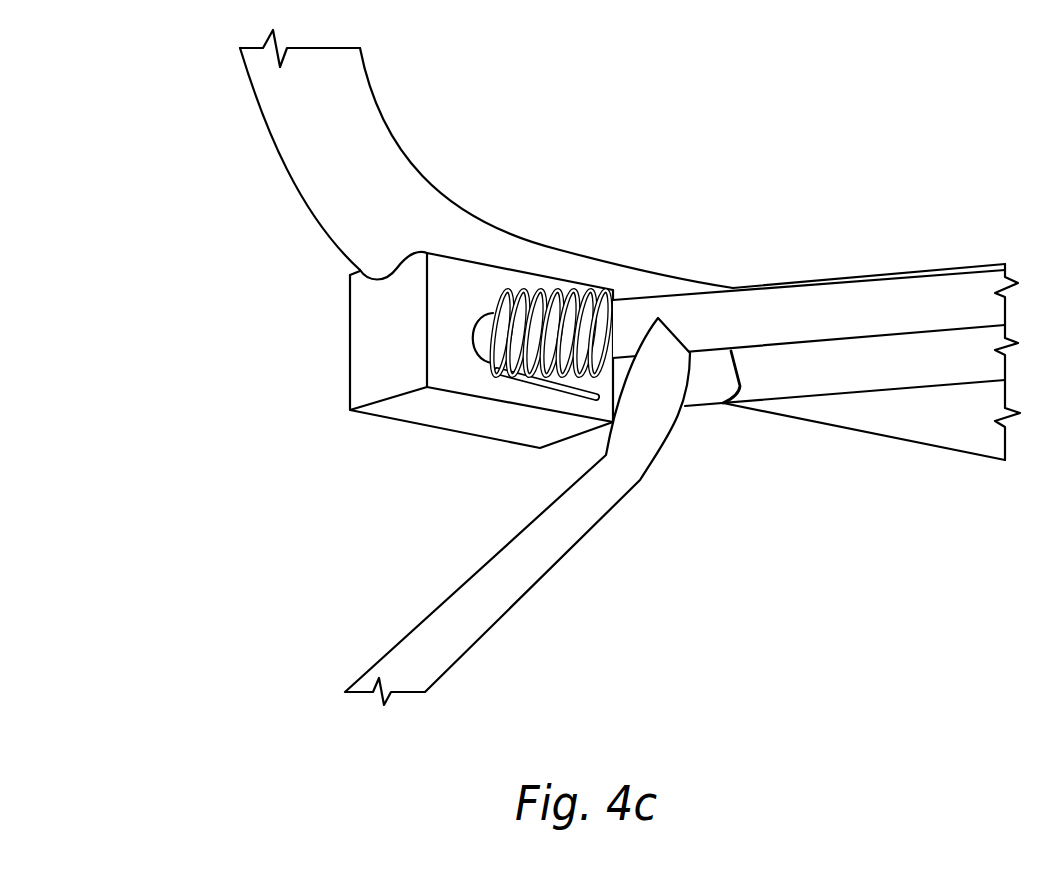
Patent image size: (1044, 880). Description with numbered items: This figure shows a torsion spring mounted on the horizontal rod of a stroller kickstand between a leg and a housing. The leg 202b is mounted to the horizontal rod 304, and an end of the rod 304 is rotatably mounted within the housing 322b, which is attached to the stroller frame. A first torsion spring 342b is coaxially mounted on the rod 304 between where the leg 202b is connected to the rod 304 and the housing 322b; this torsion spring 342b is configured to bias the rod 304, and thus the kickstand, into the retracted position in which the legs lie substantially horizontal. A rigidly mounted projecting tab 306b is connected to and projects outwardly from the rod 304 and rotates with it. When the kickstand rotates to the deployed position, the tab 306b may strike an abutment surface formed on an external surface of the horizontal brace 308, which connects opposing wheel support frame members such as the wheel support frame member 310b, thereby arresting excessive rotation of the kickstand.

The wheel support frame member 310b is at (296, 146).
The housing 322b is at (381, 338).
The first torsion spring 342b is at (572, 290).
The horizontal rod 304 is at (853, 303).
The horizontal brace 308 is at (930, 362).
The leg 202b is at (517, 562).
The projecting tab 306b is at (718, 386).